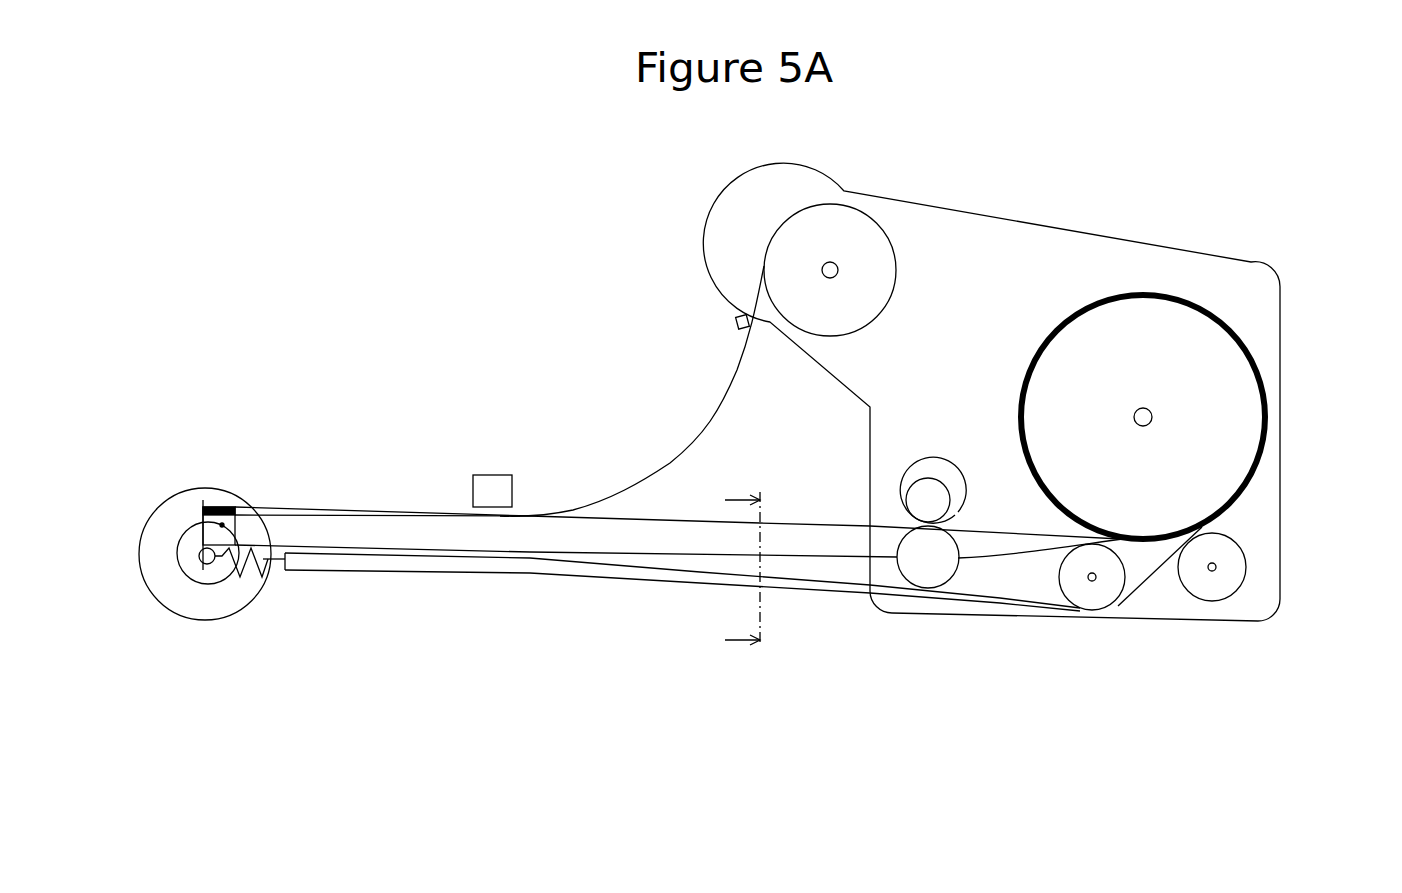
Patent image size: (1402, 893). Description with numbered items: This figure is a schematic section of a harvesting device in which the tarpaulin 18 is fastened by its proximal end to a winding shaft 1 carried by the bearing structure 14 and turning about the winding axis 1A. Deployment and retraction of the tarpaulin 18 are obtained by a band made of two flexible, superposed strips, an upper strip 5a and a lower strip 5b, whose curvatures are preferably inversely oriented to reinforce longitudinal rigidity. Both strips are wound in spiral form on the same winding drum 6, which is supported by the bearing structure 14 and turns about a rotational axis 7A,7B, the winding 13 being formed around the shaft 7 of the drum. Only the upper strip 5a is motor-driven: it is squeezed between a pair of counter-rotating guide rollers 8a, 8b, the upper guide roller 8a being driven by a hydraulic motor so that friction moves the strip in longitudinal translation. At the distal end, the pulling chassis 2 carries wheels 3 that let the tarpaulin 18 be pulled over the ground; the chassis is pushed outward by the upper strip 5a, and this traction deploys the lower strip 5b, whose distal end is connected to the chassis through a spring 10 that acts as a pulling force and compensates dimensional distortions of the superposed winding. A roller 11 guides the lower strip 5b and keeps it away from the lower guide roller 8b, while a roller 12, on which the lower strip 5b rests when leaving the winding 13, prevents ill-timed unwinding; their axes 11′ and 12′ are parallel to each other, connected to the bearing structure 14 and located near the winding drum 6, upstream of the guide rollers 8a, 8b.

The winding shaft 1 is at (829, 245).
The winding axis 1A is at (824, 266).
The bearing structure 14 is at (1008, 220).
The winding drum 6 is at (1168, 370).
The winding 13 is at (1267, 418).
The pulling chassis 2 is at (222, 524).
The wheels 3 is at (208, 593).
The upper strip 5a is at (393, 535).
The lower strip 5b is at (432, 568).
The spring 10 is at (247, 573).
The tarpaulin 18 is at (670, 463).
The shaft of the drums 7 is at (742, 551).
The upper guide roller 8a is at (945, 490).
The lower guide roller 8b is at (947, 547).
The roller 11 is at (1083, 600).
The axis of roller 11 11′ is at (1094, 579).
The roller 12 is at (1207, 590).
The axis of roller 12 12′ is at (1216, 569).
The rotational axis of the winding drum 7A,7B is at (1145, 420).